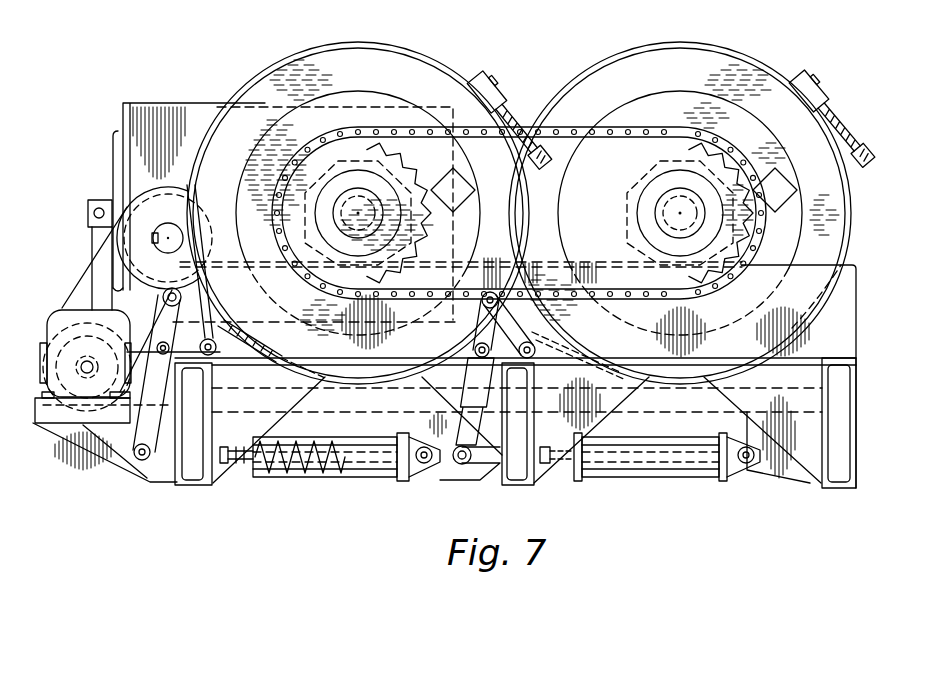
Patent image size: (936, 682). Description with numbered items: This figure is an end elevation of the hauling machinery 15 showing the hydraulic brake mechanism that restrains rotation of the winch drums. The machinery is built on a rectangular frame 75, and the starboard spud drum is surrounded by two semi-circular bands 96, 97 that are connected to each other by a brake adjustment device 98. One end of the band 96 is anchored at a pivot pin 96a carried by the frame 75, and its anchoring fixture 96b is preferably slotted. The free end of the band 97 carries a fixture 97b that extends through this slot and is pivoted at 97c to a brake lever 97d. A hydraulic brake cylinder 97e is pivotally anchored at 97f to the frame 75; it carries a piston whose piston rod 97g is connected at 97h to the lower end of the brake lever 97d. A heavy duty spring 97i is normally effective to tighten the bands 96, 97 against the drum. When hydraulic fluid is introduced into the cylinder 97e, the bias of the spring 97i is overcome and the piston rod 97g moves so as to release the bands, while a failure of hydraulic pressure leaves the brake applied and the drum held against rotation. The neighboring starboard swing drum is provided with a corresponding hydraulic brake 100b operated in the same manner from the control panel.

The hauling machinery 15 is at (857, 295).
The rectangular frame 75 is at (840, 350).
The semi-circular band 96 is at (440, 64).
The pivot pin 96a is at (215, 372).
The anchoring fixture 96b is at (203, 286).
The semi-circular band 97 is at (422, 372).
The fixture 97b is at (243, 331).
The pivot 97c is at (164, 238).
The brake lever 97d is at (112, 447).
The hydraulic brake cylinder 97e is at (360, 470).
The pivotal anchor 97f is at (424, 463).
The piston rod 97g is at (236, 468).
The connection 97h is at (141, 462).
The heavy duty spring 97i is at (326, 447).
The brake adjustment device 98 is at (512, 110).
The brake 100b is at (752, 57).